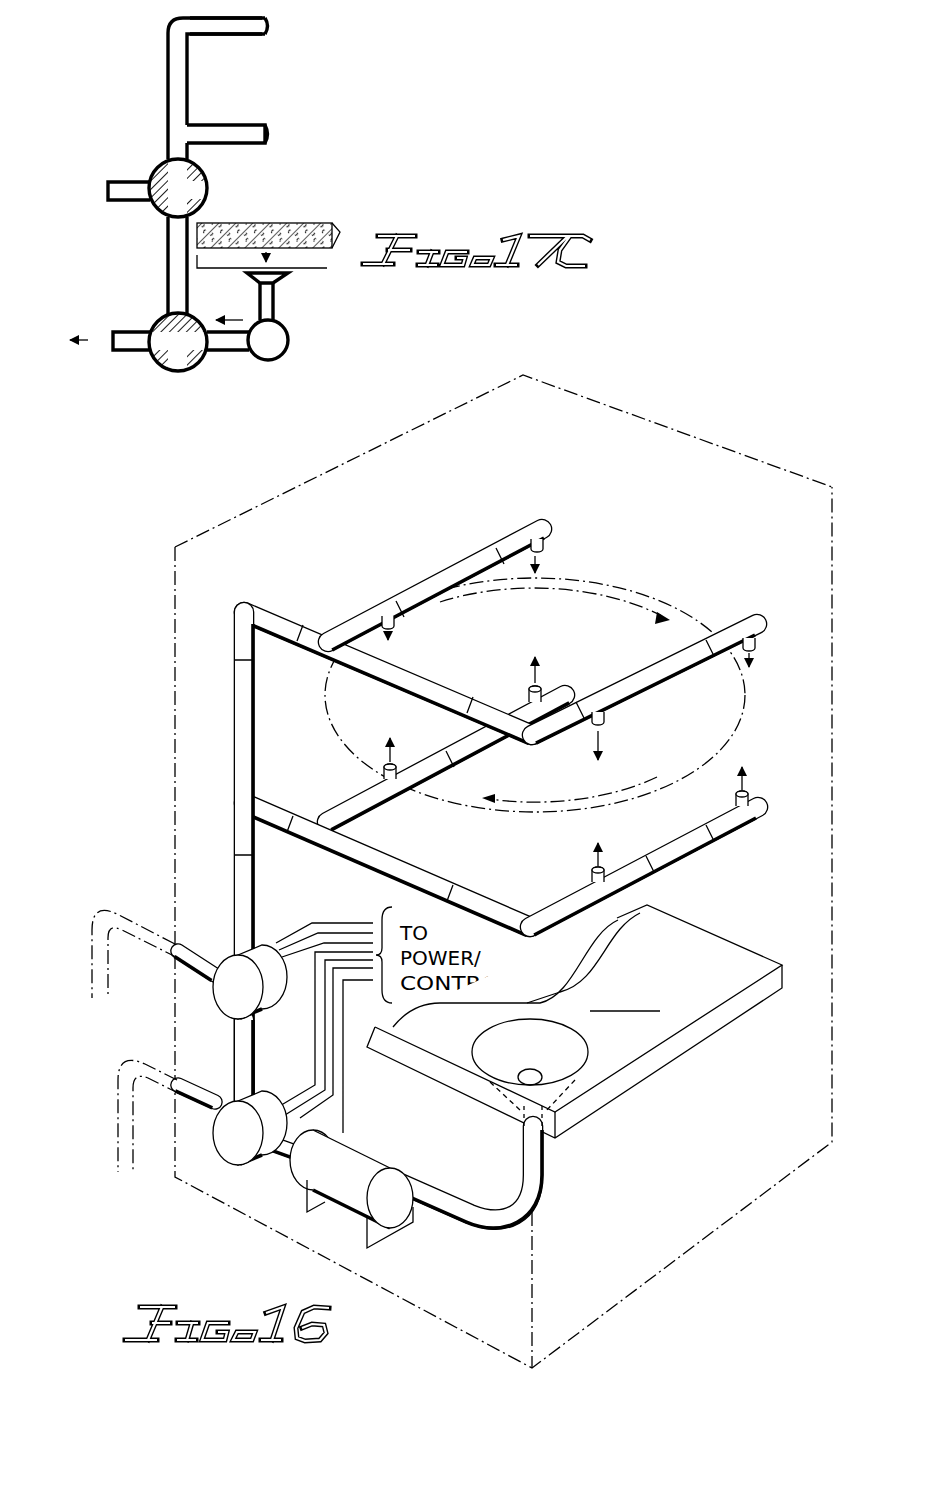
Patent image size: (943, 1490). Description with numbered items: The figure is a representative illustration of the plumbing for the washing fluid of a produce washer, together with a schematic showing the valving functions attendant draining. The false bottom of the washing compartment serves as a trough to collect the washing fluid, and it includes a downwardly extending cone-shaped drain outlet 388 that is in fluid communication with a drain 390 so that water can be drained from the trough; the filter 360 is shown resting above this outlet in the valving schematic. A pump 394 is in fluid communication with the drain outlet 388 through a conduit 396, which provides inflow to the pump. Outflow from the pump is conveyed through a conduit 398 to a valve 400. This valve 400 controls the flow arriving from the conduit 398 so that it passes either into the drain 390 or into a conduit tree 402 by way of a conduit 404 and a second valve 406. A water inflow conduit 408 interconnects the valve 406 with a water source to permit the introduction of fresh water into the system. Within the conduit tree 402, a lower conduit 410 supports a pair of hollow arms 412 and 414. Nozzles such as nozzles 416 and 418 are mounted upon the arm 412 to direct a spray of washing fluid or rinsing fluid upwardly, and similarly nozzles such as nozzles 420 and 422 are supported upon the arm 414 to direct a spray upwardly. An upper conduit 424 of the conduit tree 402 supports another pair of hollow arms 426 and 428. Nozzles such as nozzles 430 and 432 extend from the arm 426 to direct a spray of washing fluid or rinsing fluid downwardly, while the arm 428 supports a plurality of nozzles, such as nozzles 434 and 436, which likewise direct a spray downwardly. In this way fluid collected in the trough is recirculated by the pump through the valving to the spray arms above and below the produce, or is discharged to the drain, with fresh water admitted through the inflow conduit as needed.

In FIG. 17C, the filter 360 is at (262, 222).
In FIG. 17C, the drain outlet 388 is at (283, 278).
In FIG. 16, the drain outlet 388 is at (589, 1054).
In FIG. 17C, the drain 390 is at (135, 331).
In FIG. 16, the drain 390 is at (117, 1140).
In FIG. 17C, the pump 394 is at (289, 345).
In FIG. 16, the pump 394 is at (355, 1210).
In FIG. 17C, the conduit 396 is at (275, 310).
In FIG. 16, the conduit 396 is at (497, 1203).
In FIG. 17C, the conduit 398 is at (228, 351).
In FIG. 16, the conduit 398 is at (283, 1162).
In FIG. 17C, the valve 400 is at (155, 316).
In FIG. 16, the valve 400 is at (226, 1150).
In FIG. 17C, the conduit tree 402 is at (158, 72).
In FIG. 16, the conduit tree 402 is at (228, 714).
In FIG. 17C, the conduit 404 is at (167, 243).
In FIG. 16, the conduit 404 is at (240, 1040).
In FIG. 17C, the valve 406 is at (153, 170).
In FIG. 16, the valve 406 is at (230, 955).
In FIG. 17C, the water inflow conduit 408 is at (127, 181).
In FIG. 16, the water inflow conduit 408 is at (160, 890).
In FIG. 17C, the conduit 410 is at (220, 100).
In FIG. 16, the conduit 410 is at (338, 845).
In FIG. 16, the hollow arm 412 is at (378, 803).
In FIG. 16, the hollow arm 414 is at (700, 858).
In FIG. 16, the nozzle 416 is at (396, 766).
In FIG. 16, the nozzle 418 is at (541, 680).
In FIG. 16, the nozzle 420 is at (604, 866).
In FIG. 16, the nozzle 422 is at (748, 792).
In FIG. 17C, the conduit 424 is at (224, 35).
In FIG. 16, the conduit 424 is at (378, 679).
In FIG. 16, the hollow arm 426 is at (446, 568).
In FIG. 16, the hollow arm 428 is at (670, 678).
In FIG. 16, the nozzle 430 is at (394, 624).
In FIG. 16, the nozzle 432 is at (544, 541).
In FIG. 16, the nozzle 434 is at (604, 726).
In FIG. 16, the nozzle 436 is at (755, 642).